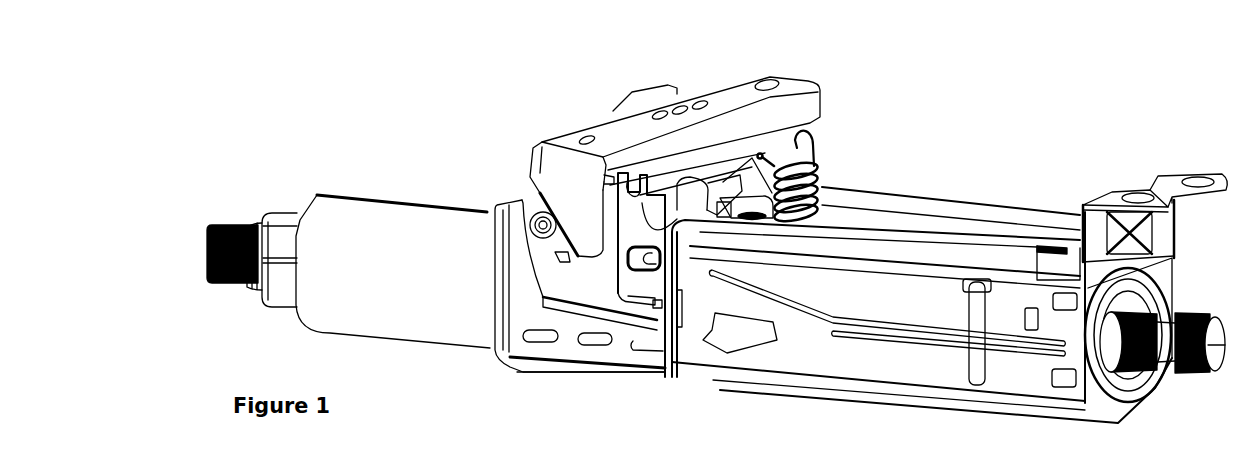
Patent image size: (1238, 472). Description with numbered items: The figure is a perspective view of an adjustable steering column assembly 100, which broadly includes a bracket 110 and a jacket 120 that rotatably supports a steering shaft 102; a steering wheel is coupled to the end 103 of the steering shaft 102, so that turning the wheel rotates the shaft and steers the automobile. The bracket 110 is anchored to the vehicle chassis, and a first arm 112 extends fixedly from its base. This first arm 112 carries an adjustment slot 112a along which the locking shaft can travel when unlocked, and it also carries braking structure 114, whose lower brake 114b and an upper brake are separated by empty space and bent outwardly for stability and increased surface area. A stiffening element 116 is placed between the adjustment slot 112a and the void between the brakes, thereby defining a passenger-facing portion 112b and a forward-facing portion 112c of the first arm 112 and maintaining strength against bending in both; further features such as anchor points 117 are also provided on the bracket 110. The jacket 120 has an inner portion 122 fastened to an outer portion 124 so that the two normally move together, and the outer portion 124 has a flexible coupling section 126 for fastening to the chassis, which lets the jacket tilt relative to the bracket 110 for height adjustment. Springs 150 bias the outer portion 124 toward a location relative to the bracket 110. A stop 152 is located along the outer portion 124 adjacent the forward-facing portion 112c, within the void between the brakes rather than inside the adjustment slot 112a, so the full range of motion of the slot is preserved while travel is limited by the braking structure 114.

The adjustable steering column assembly 100 is at (1023, 103).
The steering shaft 102 is at (280, 210).
The end of the steering shaft 103 is at (235, 210).
The bracket 110 is at (803, 69).
The first arm 112 is at (725, 95).
The adjustment slot 112a is at (566, 262).
The passenger-facing portion 112b is at (543, 256).
The forward-facing portion 112c is at (608, 221).
The braking structure 114 is at (639, 307).
The lower brake 114b is at (652, 279).
The stiffening element 116 is at (552, 168).
The anchor points 117 is at (628, 188).
The jacket 120 is at (941, 190).
The inner portion 122 is at (350, 186).
The outer portion 124 is at (985, 197).
The coupling section 126 is at (1170, 157).
The springs 150 is at (822, 183).
The stop 152 is at (657, 307).